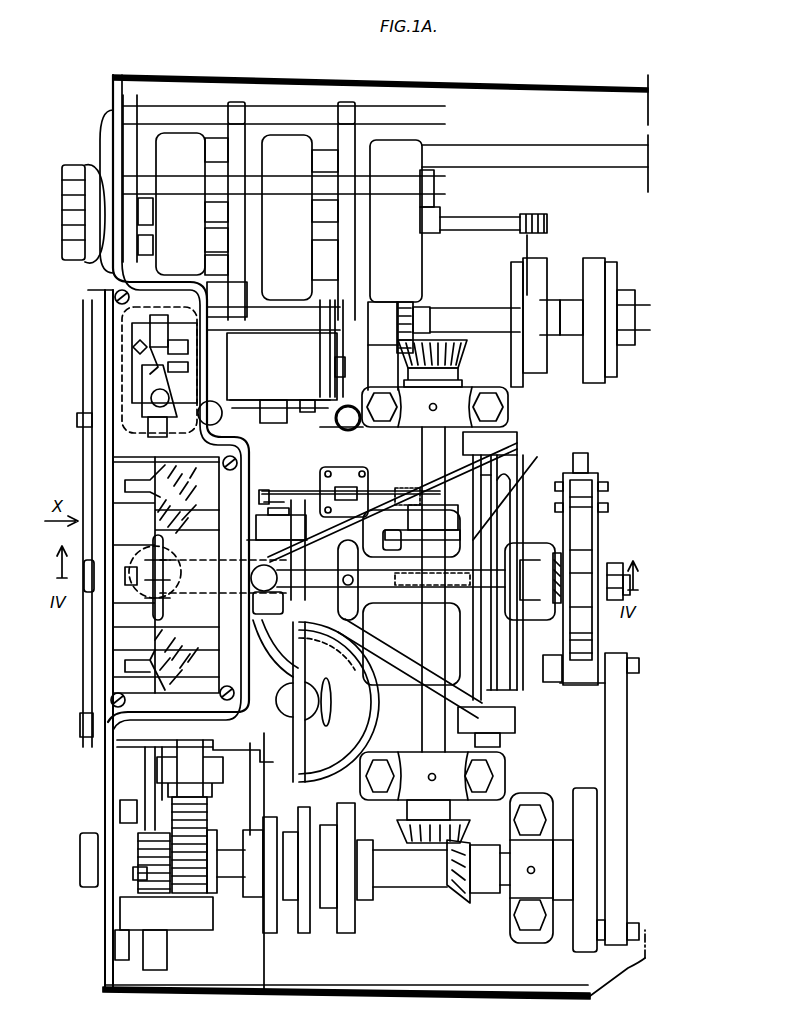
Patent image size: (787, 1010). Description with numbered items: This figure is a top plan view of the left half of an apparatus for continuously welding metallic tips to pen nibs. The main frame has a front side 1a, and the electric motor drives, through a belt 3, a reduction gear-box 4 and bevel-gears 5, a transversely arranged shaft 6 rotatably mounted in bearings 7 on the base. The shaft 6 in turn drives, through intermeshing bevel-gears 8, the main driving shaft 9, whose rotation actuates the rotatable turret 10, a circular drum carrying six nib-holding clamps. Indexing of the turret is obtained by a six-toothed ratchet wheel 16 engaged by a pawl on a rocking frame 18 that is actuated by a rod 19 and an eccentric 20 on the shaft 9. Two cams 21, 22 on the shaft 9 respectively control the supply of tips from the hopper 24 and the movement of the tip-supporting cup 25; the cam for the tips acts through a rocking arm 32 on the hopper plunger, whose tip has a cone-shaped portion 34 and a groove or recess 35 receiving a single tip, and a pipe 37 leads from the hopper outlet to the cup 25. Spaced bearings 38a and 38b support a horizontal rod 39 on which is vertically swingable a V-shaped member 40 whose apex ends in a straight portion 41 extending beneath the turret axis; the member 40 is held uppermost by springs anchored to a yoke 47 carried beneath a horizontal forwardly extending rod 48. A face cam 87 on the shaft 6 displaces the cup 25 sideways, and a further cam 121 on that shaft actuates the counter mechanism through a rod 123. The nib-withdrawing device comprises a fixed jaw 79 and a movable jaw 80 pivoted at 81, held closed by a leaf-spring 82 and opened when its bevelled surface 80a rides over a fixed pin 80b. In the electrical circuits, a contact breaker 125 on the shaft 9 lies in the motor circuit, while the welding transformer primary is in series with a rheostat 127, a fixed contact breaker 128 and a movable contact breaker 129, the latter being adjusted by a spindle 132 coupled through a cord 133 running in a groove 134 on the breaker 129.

The front side 1a is at (249, 452).
The belt 3 is at (492, 150).
The reduction gear-box 4 is at (292, 395).
The bevel-gears 5 is at (432, 315).
The transversely arranged shaft 6 is at (422, 447).
The bearings 7 is at (455, 387).
The intermeshing bevel-gears 8 is at (440, 880).
The main driving shaft 9 is at (417, 873).
The rotatable turret 10 is at (122, 628).
The ratchet wheel 16 is at (585, 535).
The rocking frame 18 is at (598, 475).
The rod 19 is at (610, 750).
The eccentric 20 is at (582, 945).
The cam 21 is at (302, 922).
The cam 22 is at (268, 925).
The hopper 24 is at (370, 720).
The tip-supporting cup 25 is at (172, 595).
The rocking arm 32 is at (270, 806).
The cone-shaped portion 34 is at (327, 720).
The groove or recess 35 is at (323, 686).
The pipe 37 is at (262, 672).
The bearing 38a is at (515, 712).
The bearing 38b is at (513, 440).
The horizontal rod 39 is at (498, 672).
The V-shaped member 40 is at (395, 658).
The straight portion 41 is at (208, 566).
The yoke 47 is at (360, 603).
The horizontal forwardly extending rod 48 is at (540, 577).
The fixed jaw 79 is at (140, 382).
The movable jaw 80 is at (158, 380).
The bevelled surface 80a is at (172, 367).
The fixed pin 80b is at (182, 347).
The pivot 81 is at (150, 400).
The leaf-spring 82 is at (160, 368).
The face cam 87 is at (518, 490).
The cam 121 is at (432, 488).
The rod 123 is at (304, 490).
The contact breaker 125 is at (342, 922).
The rheostat 127 is at (290, 140).
The fixed contact breaker 128 is at (608, 267).
The movable contact breaker 129 is at (547, 265).
The spindle 132 is at (478, 221).
The cord 133 is at (525, 241).
The groove 134 is at (511, 268).